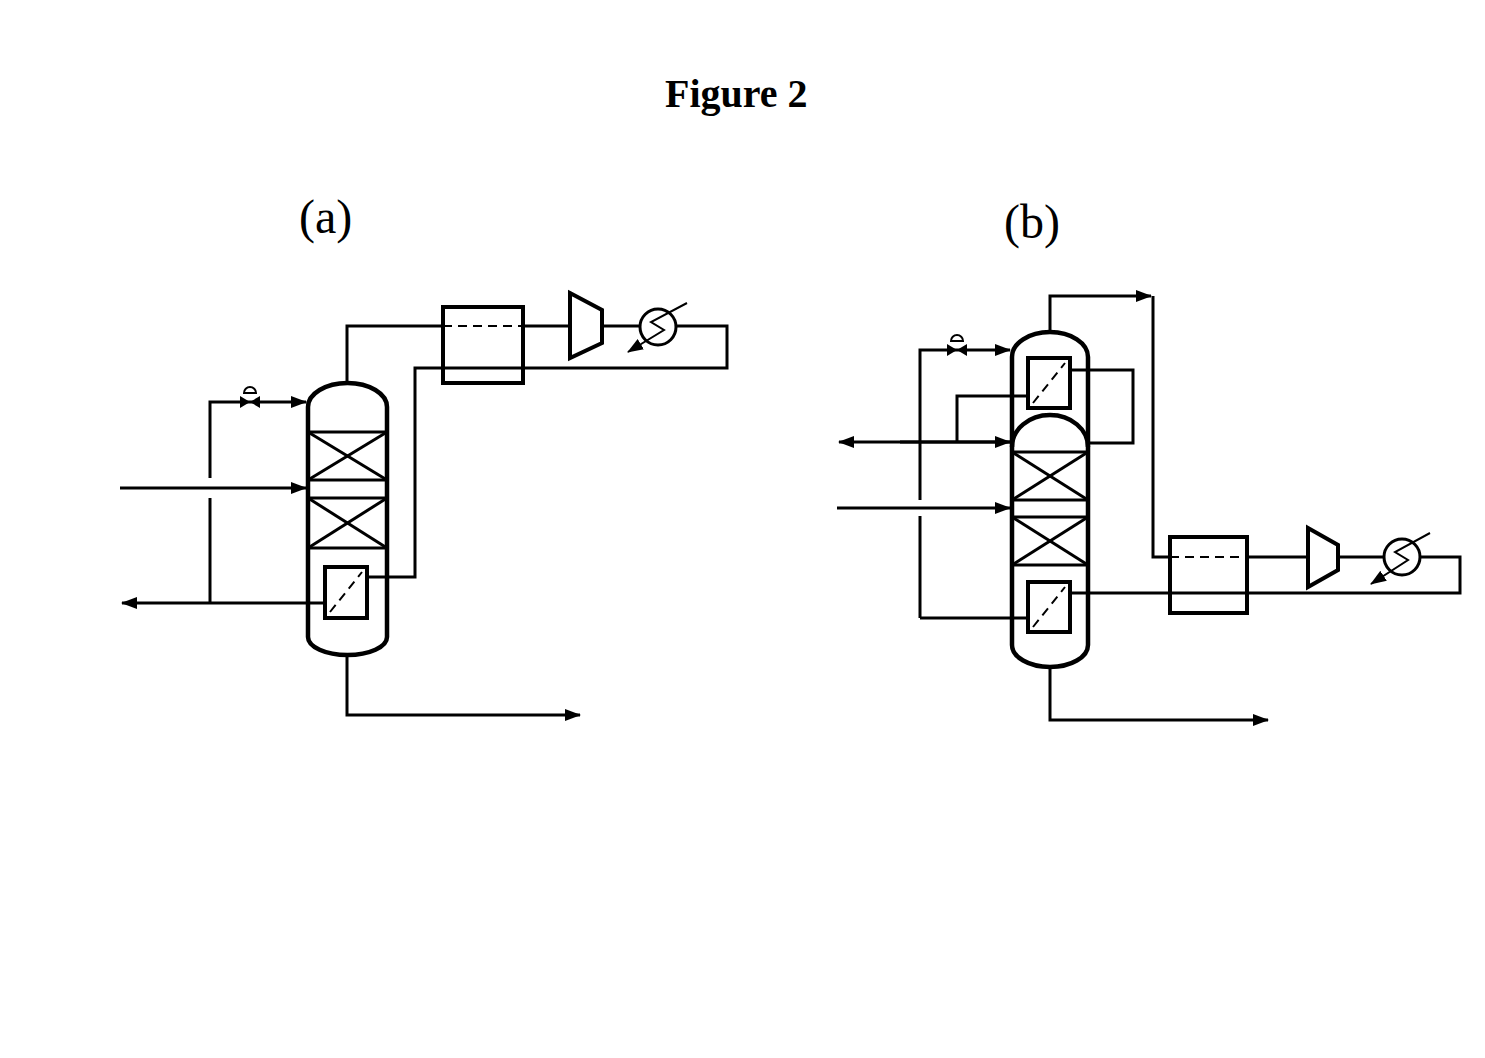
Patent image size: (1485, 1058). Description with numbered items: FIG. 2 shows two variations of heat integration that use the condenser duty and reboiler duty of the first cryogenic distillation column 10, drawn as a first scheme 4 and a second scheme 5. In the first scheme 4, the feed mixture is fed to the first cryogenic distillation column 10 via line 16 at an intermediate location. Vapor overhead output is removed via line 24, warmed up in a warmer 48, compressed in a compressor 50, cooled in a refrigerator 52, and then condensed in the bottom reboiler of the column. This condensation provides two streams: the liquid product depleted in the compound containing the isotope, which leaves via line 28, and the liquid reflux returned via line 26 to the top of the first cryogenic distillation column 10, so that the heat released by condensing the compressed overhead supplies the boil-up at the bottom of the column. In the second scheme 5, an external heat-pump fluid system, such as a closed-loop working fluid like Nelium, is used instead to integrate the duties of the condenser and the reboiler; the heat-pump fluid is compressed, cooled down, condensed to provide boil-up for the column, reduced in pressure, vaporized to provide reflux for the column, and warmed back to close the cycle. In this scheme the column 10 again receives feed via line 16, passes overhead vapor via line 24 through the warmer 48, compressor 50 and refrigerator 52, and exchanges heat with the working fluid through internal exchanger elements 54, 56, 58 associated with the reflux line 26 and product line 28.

The distillation column system (a) 4 is at (275, 705).
The distillation column system (b) 5 is at (987, 723).
The first cryogenic distillation column 10 is at (362, 488).
The feed line 16 is at (565, 520).
The vapor overhead line 24 is at (758, 412).
The liquid reflux line 26 is at (974, 461).
The liquid product line 28 is at (566, 522).
The warmer 48 is at (468, 312).
The compressor 50 is at (585, 317).
The refrigerator 52 is at (668, 300).
The internal head / partition 54 is at (1026, 451).
The internal heat exchanger inlet line 56 is at (1013, 400).
The internal heat exchanger outlet line 58 is at (1101, 392).